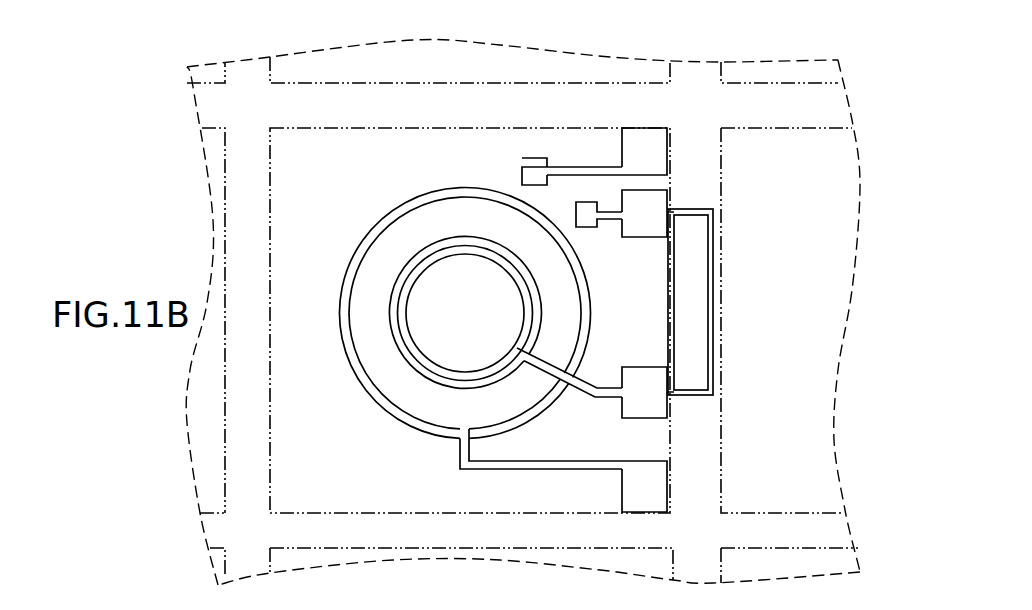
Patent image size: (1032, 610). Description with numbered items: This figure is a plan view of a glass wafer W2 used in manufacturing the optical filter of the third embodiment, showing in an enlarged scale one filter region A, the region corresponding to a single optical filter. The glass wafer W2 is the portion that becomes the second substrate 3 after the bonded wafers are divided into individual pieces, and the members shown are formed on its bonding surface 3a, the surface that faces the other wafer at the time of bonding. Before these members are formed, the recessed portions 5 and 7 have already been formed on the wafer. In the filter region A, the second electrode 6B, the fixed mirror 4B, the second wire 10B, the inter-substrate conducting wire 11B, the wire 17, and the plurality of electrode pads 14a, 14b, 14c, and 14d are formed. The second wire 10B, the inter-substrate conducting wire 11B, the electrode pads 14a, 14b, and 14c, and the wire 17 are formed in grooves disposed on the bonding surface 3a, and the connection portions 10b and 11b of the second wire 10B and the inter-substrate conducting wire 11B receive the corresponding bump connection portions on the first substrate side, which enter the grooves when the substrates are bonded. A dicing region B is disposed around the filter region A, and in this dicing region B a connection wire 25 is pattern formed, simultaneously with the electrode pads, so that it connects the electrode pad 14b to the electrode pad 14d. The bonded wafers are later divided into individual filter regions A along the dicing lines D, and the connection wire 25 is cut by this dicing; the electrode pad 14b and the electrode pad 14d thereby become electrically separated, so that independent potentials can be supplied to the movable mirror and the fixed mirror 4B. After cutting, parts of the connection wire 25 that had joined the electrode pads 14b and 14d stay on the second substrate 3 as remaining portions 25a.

The second substrate 3 is at (270, 418).
The bonding surface 3a is at (441, 304).
The filter region A is at (292, 155).
The glass wafer W2 is at (207, 272).
The dicing line D is at (608, 128).
The dicing region B is at (695, 103).
The second electrode 6B is at (411, 248).
The recessed portion 7 is at (435, 192).
The fixed mirror 4B is at (386, 283).
The recessed portion 5 is at (402, 278).
The second wire 10B is at (575, 366).
The connection portion 10b is at (587, 223).
The inter-substrate conducting wire 11B is at (566, 170).
The connection portion 11b is at (537, 165).
The electrode pad 14a is at (652, 142).
The electrode pad 14b is at (663, 195).
The electrode pad 14c is at (652, 486).
The electrode pad 14d is at (657, 410).
The wire 17 is at (507, 470).
The connection wire 25 is at (747, 299).
The remaining portion 25a is at (672, 210).